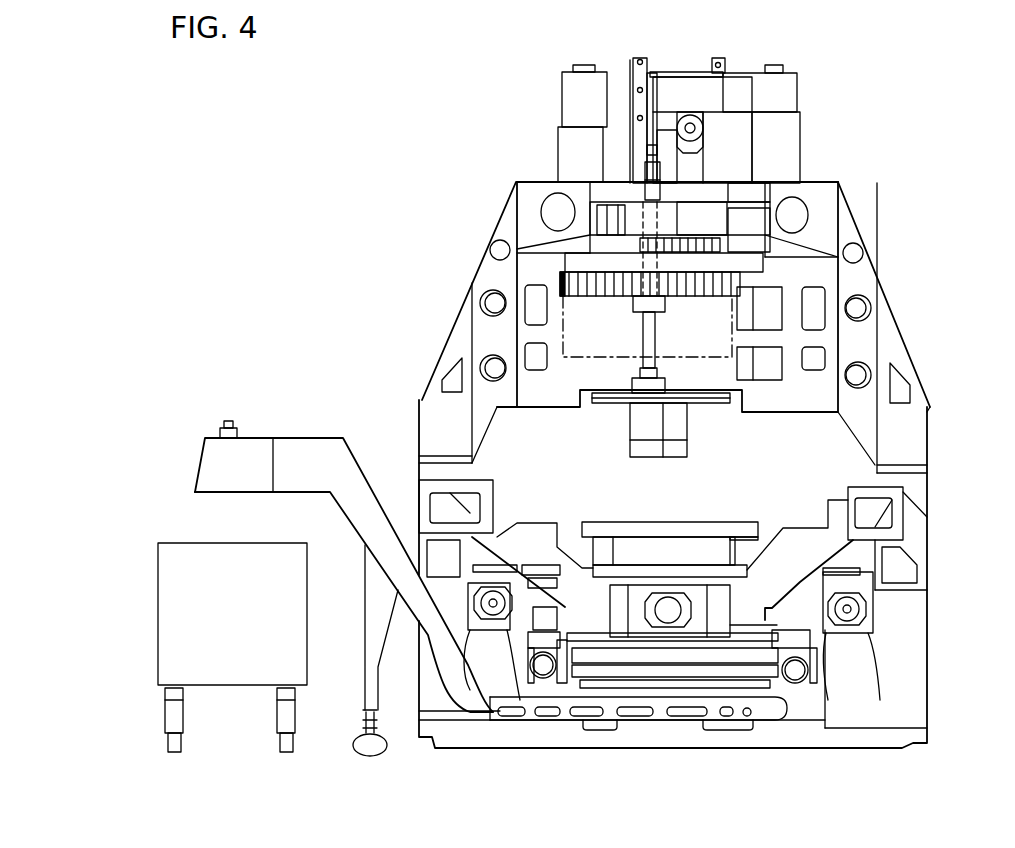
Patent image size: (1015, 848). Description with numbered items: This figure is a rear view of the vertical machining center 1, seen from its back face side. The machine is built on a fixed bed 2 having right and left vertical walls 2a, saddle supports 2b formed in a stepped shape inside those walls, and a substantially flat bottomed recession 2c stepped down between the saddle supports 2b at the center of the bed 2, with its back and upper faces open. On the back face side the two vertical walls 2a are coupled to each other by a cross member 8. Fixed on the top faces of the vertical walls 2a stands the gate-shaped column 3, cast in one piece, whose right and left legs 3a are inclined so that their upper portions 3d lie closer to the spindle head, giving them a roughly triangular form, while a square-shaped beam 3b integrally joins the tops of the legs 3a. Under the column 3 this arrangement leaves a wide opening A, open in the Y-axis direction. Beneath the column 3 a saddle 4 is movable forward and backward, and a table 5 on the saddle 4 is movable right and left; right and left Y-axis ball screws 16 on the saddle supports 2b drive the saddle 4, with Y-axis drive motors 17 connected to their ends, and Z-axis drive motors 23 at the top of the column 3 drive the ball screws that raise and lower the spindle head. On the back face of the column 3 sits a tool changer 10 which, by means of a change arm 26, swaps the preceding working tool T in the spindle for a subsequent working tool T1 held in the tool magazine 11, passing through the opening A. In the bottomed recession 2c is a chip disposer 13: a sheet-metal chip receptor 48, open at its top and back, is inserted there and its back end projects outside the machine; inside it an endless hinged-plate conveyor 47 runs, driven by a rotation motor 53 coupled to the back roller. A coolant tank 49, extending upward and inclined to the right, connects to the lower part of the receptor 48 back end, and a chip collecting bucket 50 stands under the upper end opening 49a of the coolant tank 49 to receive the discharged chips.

The vertical machining center 1 is at (952, 128).
The fixed bed 2 is at (932, 637).
The vertical walls 2a is at (418, 545).
The saddle supports 2b is at (517, 696).
The bottomed recession 2c is at (703, 680).
The column 3 is at (908, 350).
The legs 3a is at (420, 417).
The beam 3b is at (818, 182).
The upper portions 3d is at (492, 243).
The saddle 4 is at (495, 548).
The table 5 is at (735, 522).
The cross member 8 is at (807, 525).
The tool changer 10 is at (590, 410).
The tool magazine 11 is at (560, 272).
The chip disposer 13 is at (266, 416).
The Y-axis ball screws 16 is at (493, 608).
The Y-axis drive motors 17 is at (480, 637).
The Z-axis drive motors 23 is at (560, 96).
The change arm 26 is at (688, 410).
The conveyor 47 is at (641, 668).
The chip receptor 48 is at (613, 689).
The coolant tank 49 is at (320, 436).
The upper end opening 49a is at (208, 492).
The chip collecting bucket 50 is at (158, 560).
The rotation motor 53 is at (542, 680).
The opening A is at (843, 449).
The tool T is at (688, 453).
The tool T1 is at (630, 455).